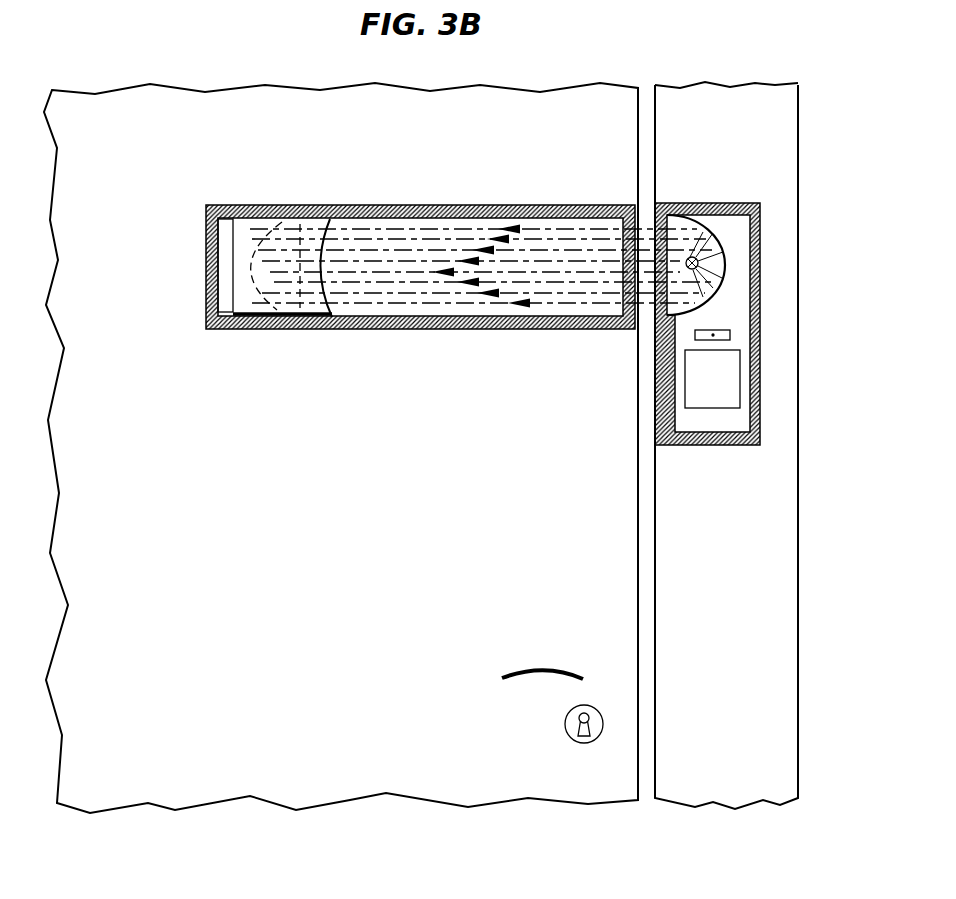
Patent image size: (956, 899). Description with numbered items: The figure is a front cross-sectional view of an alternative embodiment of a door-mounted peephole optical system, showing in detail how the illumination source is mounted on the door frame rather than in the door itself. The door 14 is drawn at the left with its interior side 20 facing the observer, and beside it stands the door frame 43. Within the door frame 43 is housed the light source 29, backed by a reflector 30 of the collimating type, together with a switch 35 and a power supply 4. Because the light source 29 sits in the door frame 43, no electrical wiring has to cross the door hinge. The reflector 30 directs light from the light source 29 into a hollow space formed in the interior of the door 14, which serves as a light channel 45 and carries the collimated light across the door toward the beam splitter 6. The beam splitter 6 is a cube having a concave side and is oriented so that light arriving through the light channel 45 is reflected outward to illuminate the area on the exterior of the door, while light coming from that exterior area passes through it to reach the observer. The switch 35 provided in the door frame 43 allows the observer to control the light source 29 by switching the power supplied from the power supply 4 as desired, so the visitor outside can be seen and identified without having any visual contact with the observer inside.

The power supply 4 is at (740, 362).
The beam splitter 6 is at (252, 326).
The door 14 is at (638, 113).
The interior side 20 is at (618, 468).
The light source 29 is at (698, 263).
The reflector 30 is at (722, 243).
The switch 35 is at (727, 329).
The door frame 43 is at (778, 163).
The light channel 45 is at (592, 222).